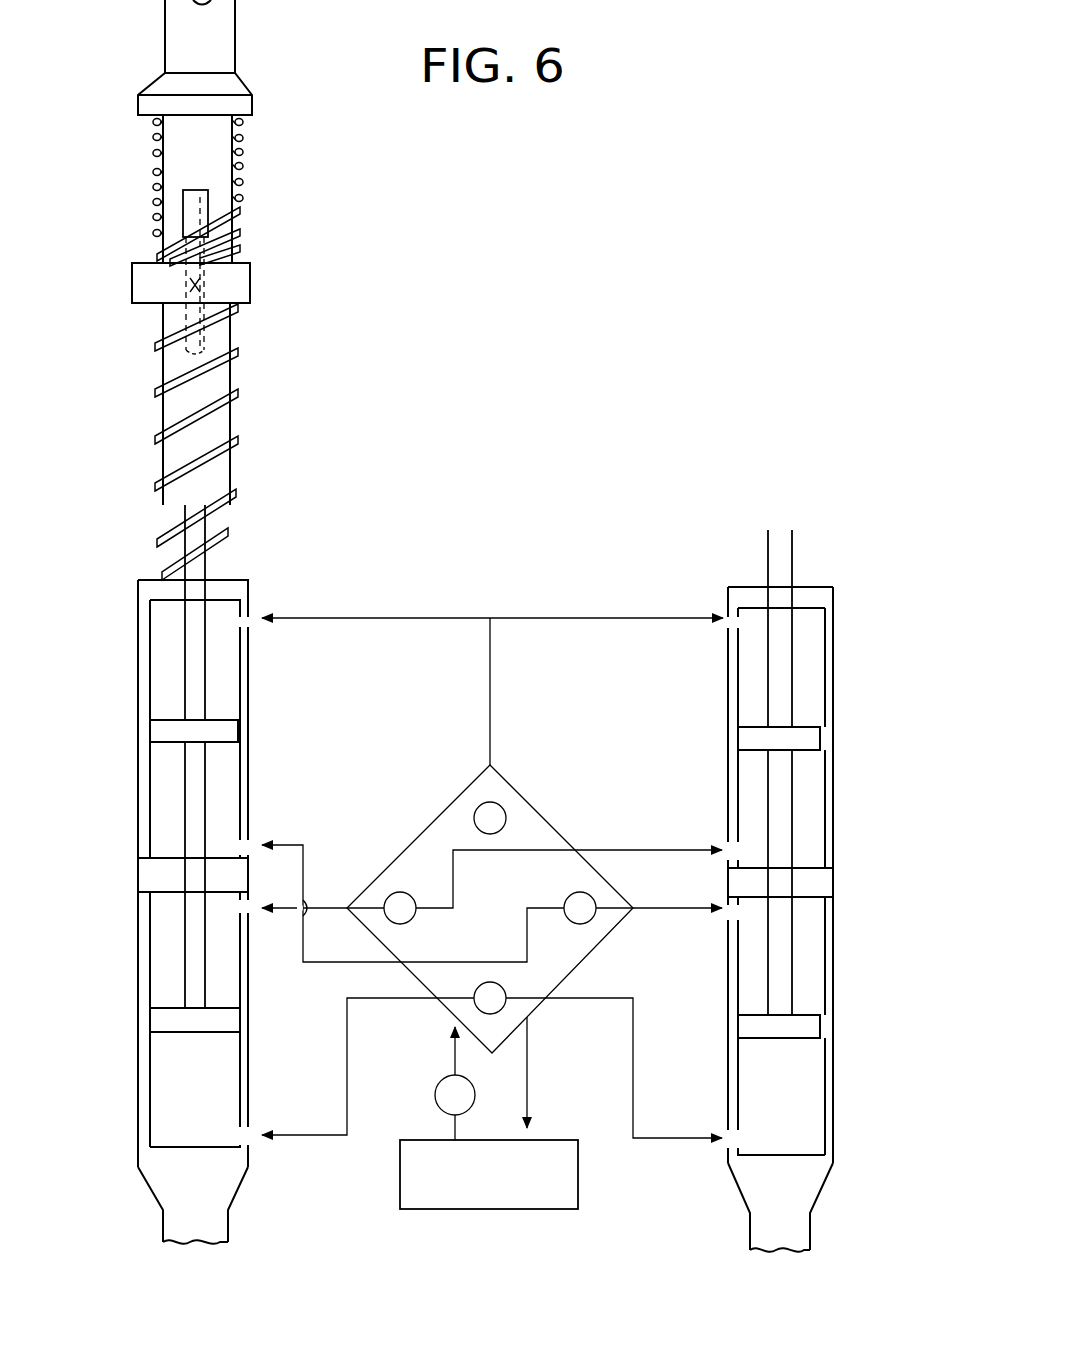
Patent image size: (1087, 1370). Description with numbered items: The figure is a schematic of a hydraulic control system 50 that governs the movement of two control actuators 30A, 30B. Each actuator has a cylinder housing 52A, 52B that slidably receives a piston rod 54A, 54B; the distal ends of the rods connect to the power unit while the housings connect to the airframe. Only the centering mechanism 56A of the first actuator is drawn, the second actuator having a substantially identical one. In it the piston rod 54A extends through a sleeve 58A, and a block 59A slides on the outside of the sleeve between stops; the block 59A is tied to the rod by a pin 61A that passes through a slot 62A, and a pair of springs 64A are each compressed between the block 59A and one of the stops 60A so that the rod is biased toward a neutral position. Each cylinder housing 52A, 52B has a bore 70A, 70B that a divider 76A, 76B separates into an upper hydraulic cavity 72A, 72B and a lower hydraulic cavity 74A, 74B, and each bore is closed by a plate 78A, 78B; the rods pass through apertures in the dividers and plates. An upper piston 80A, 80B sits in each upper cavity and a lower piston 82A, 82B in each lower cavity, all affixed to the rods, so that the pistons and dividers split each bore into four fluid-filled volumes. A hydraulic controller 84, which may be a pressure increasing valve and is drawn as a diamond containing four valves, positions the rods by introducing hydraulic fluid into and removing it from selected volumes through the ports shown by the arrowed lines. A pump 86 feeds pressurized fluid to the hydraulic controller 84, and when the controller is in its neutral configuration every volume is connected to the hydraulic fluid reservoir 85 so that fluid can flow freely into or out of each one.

The sleeve 58A is at (230, 36).
The stop 60A is at (250, 107).
The centering mechanism 56A is at (376, 258).
The spring 64A is at (240, 138).
The slot 62A is at (197, 217).
The pin 61A is at (202, 277).
The block 59A is at (238, 286).
The control actuator 30A is at (282, 431).
The control actuator 30B is at (810, 556).
The plate 78A is at (240, 597).
The plate 78B is at (732, 610).
The divider 76A is at (254, 834).
The divider 76B is at (752, 867).
The upper hydraulic cavity 72A is at (230, 635).
The upper hydraulic cavity 72B is at (813, 697).
The piston 80A is at (248, 715).
The piston 80B is at (817, 742).
The cylinder housing 52A is at (141, 813).
The cylinder housing 52B is at (830, 807).
The bore 70A is at (160, 838).
The bore 70B is at (810, 938).
The piston rod 54A is at (197, 761).
The piston rod 54B is at (810, 621).
The piston 82A is at (163, 1035).
The piston 82B is at (813, 1027).
The lower hydraulic cavity 74A is at (165, 1108).
The lower hydraulic cavity 74B is at (815, 1080).
The control system 50 is at (501, 586).
The hydraulic controller 84 is at (436, 790).
The pump 86 is at (440, 1103).
The hydraulic fluid reservoir 85 is at (500, 1208).